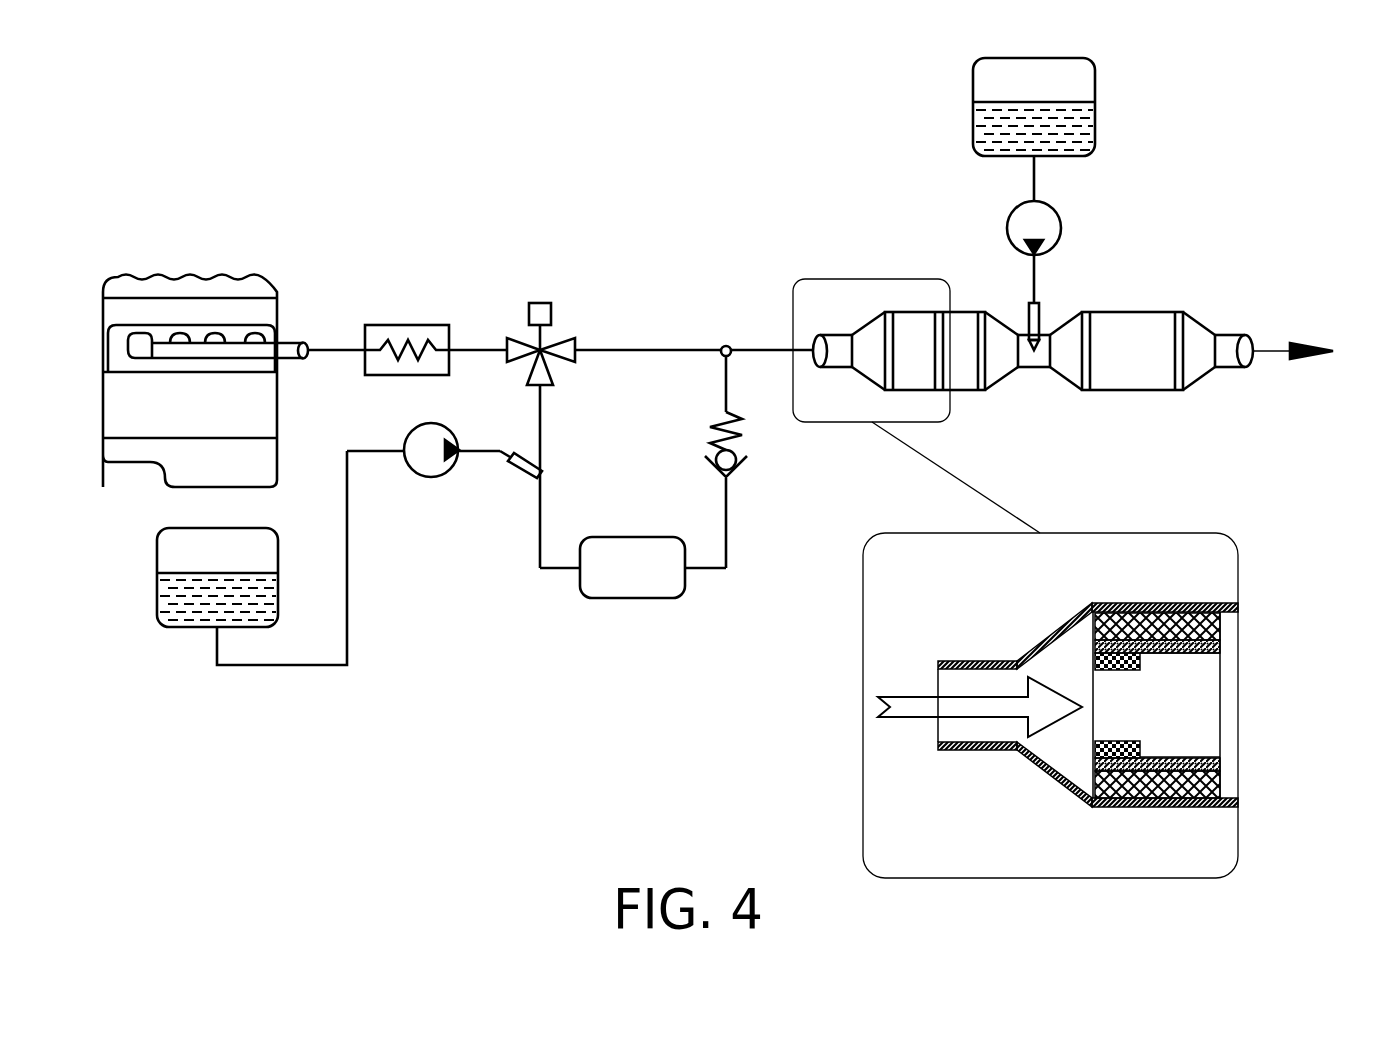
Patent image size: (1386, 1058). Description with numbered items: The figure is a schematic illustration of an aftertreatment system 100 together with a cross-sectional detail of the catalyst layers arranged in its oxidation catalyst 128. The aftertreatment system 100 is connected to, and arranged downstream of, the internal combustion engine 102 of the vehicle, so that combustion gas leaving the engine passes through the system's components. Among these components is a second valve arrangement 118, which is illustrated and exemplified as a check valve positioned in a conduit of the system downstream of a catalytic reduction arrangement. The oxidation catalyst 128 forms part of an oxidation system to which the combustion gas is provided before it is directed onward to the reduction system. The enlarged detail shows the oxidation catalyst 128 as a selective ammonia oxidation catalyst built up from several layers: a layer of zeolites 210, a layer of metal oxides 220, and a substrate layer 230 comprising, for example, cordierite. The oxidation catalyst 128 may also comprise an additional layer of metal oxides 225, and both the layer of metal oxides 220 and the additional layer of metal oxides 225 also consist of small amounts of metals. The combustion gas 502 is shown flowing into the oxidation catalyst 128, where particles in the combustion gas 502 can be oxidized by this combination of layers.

The aftertreatment system 100 is at (1253, 140).
The internal combustion engine 102 is at (203, 315).
The second valve arrangement 118 is at (770, 449).
The oxidation catalyst 128 is at (868, 318).
The layer of zeolites 210 is at (1115, 670).
The layer of metal oxides 220 is at (1140, 658).
The additional layer of metal oxides 225 is at (1222, 647).
The substrate layer 230 is at (1222, 621).
The combustion gas 502 is at (908, 716).